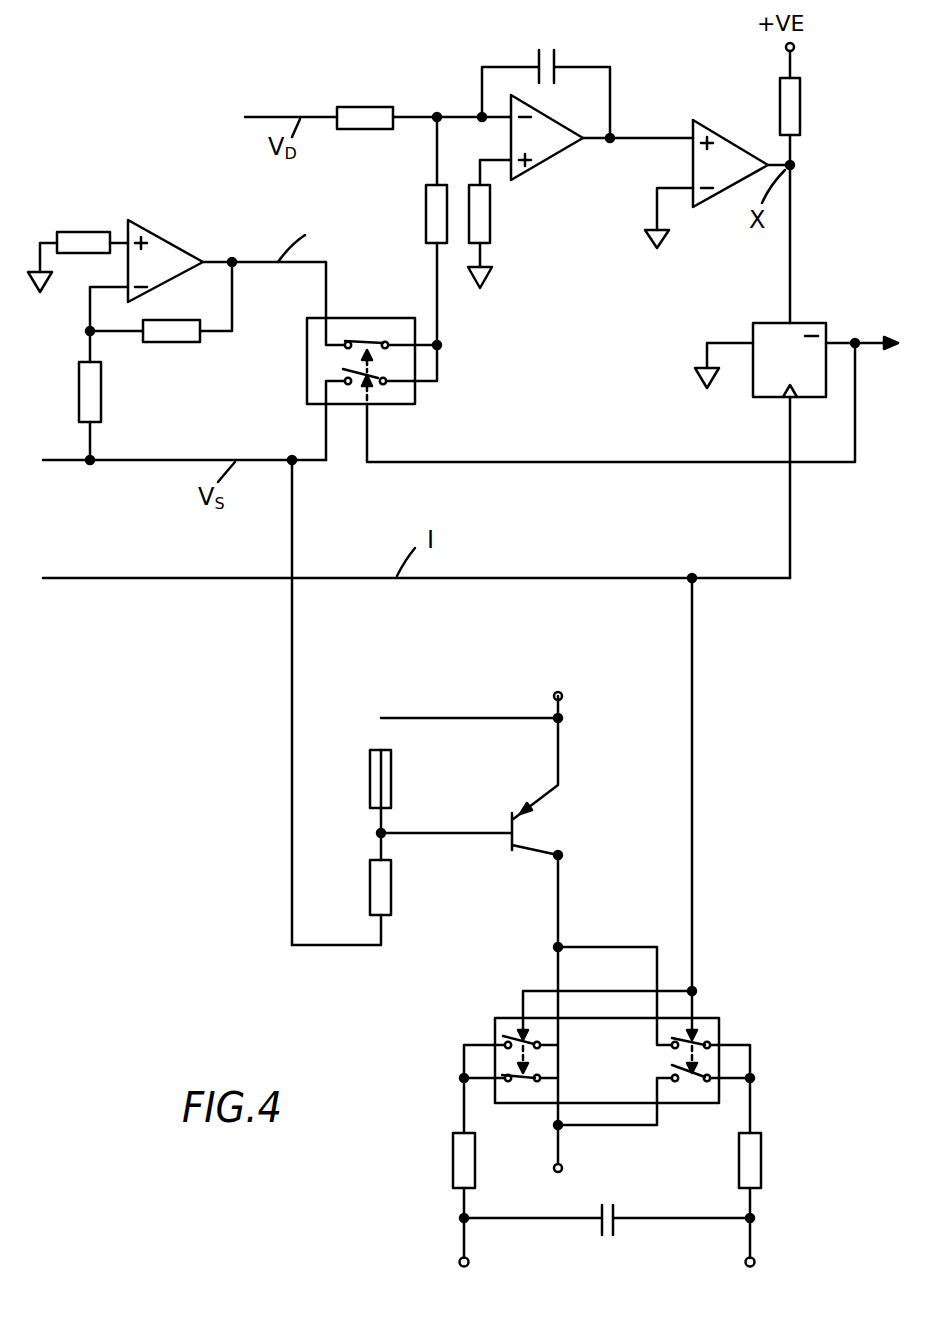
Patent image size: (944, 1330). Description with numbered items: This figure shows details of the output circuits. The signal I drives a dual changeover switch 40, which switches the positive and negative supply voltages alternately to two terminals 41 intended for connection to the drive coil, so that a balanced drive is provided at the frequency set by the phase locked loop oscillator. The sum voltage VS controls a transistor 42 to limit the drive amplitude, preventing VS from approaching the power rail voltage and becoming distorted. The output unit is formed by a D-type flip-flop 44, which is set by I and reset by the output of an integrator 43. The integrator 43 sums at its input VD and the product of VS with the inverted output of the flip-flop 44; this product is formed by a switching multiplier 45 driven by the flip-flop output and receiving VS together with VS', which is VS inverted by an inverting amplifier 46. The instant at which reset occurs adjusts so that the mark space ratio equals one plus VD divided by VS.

The dual changeover switch 40 is at (719, 1018).
The terminals 41 is at (468, 1266).
The transistor 42 is at (552, 812).
The integrator 43 is at (565, 168).
The D-type flip-flop 44 is at (753, 326).
The switching multiplier 45 is at (415, 404).
The inverting amplifier 46 is at (182, 247).